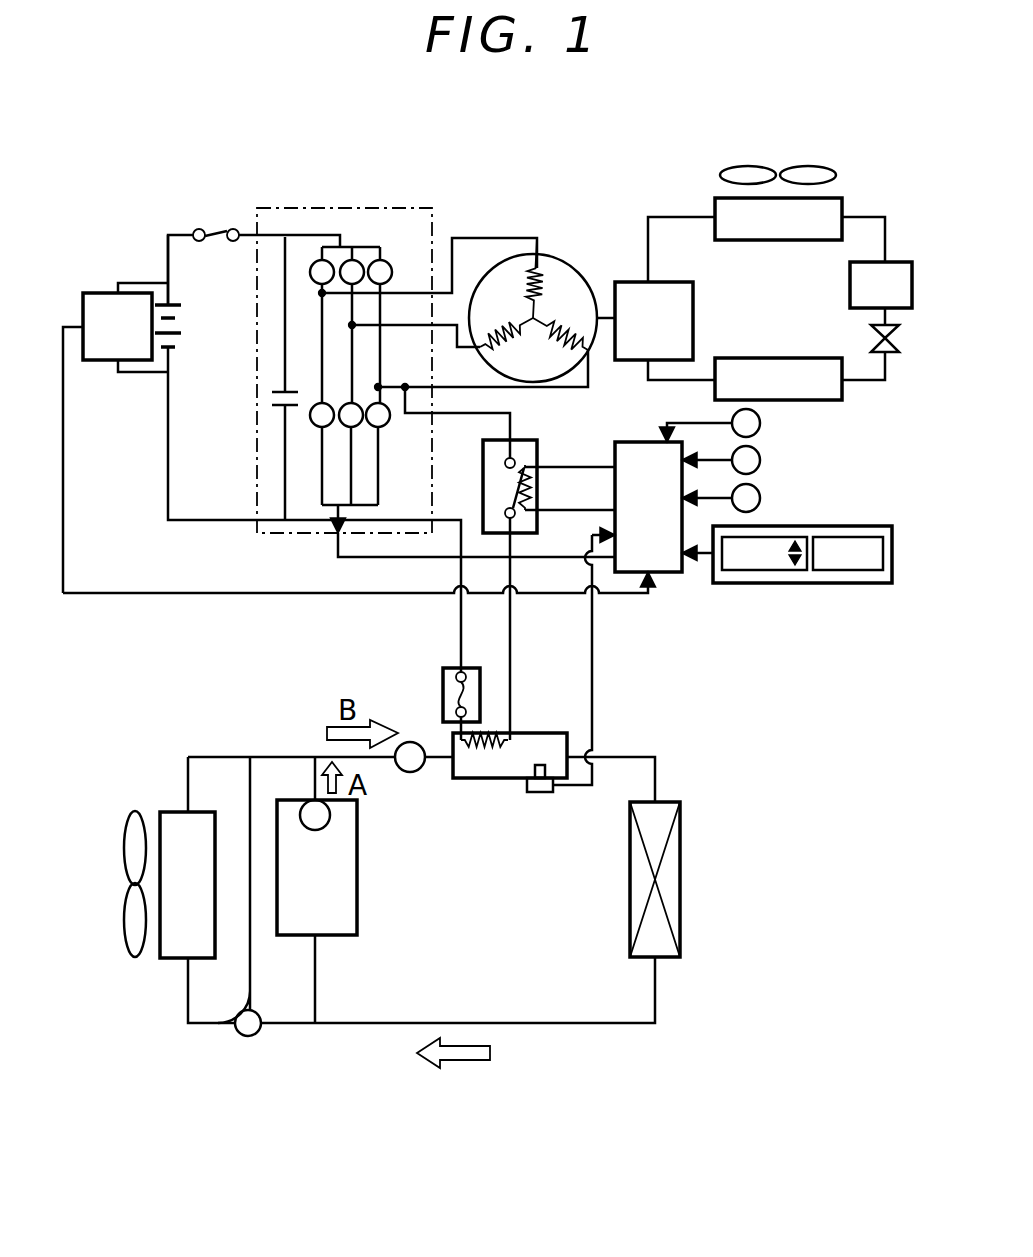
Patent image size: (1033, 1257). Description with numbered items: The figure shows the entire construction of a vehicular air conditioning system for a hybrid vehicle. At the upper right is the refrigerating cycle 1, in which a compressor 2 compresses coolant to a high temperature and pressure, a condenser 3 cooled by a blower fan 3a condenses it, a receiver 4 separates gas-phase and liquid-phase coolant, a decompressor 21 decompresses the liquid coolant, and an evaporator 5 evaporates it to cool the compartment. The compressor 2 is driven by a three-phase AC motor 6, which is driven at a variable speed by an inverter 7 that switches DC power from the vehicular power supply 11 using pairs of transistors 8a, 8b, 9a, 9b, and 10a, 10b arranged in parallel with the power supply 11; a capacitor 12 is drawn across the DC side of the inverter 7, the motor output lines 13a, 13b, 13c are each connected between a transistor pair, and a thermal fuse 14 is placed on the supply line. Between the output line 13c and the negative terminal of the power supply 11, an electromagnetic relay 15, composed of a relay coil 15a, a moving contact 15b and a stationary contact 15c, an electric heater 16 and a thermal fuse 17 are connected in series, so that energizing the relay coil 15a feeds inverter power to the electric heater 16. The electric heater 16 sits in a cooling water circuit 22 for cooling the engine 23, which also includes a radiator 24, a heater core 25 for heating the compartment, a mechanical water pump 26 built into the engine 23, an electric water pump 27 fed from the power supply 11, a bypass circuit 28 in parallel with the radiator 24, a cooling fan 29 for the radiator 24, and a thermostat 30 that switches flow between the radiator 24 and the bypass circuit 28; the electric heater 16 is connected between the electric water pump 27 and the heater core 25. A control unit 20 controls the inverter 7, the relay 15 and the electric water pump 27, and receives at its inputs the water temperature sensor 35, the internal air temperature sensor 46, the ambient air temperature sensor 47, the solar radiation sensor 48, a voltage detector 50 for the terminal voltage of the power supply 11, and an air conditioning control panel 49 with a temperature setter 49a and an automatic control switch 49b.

The refrigerating cycle 1 is at (862, 400).
The compressor 2 is at (645, 282).
The condenser 3 is at (745, 240).
The blower fan 3a is at (810, 167).
The receiver 4 is at (850, 290).
The evaporator 5 is at (740, 358).
The three-phase AC motor 6 is at (555, 256).
The inverter 7 is at (378, 205).
The transistor 8a is at (383, 260).
The transistor 8b is at (383, 427).
The transistor 9a is at (352, 260).
The transistor 9b is at (350, 427).
The transistor 10a is at (318, 260).
The transistor 10b is at (320, 427).
The vehicular power supply 11 is at (185, 322).
The smoothing capacitor 12 is at (272, 405).
The output line 13a is at (487, 237).
The output line 13b is at (458, 352).
The output line 13c is at (588, 390).
The thermal fuse 14 is at (216, 228).
The electromagnetic relay 15 is at (530, 545).
The relay coil 15a is at (535, 500).
The moving contact 15b is at (512, 505).
The stationary contact 15c is at (516, 458).
The electric heater 16 is at (557, 733).
The thermal fuse 17 is at (443, 692).
The control unit 20 is at (668, 574).
The decompressor 21 is at (872, 340).
The cooling water circuit 22 is at (670, 995).
The engine 23 is at (357, 875).
The radiator 24 is at (172, 960).
The heater core 25 is at (683, 850).
The mechanical water pump 26 is at (332, 818).
The electric water pump 27 is at (413, 773).
The bypass circuit 28 is at (228, 1022).
The cooling fan 29 is at (122, 946).
The thermostat 30 is at (260, 1032).
The water temperature sensor 35 is at (538, 793).
The internal air temperature sensor 46 is at (760, 423).
The ambient air temperature sensor 47 is at (760, 460).
The solar radiation sensor 48 is at (760, 498).
The air conditioning control panel 49 is at (795, 585).
The temperature setter 49a is at (737, 585).
The automatic control switch 49b is at (860, 585).
The voltage detector 50 is at (95, 362).